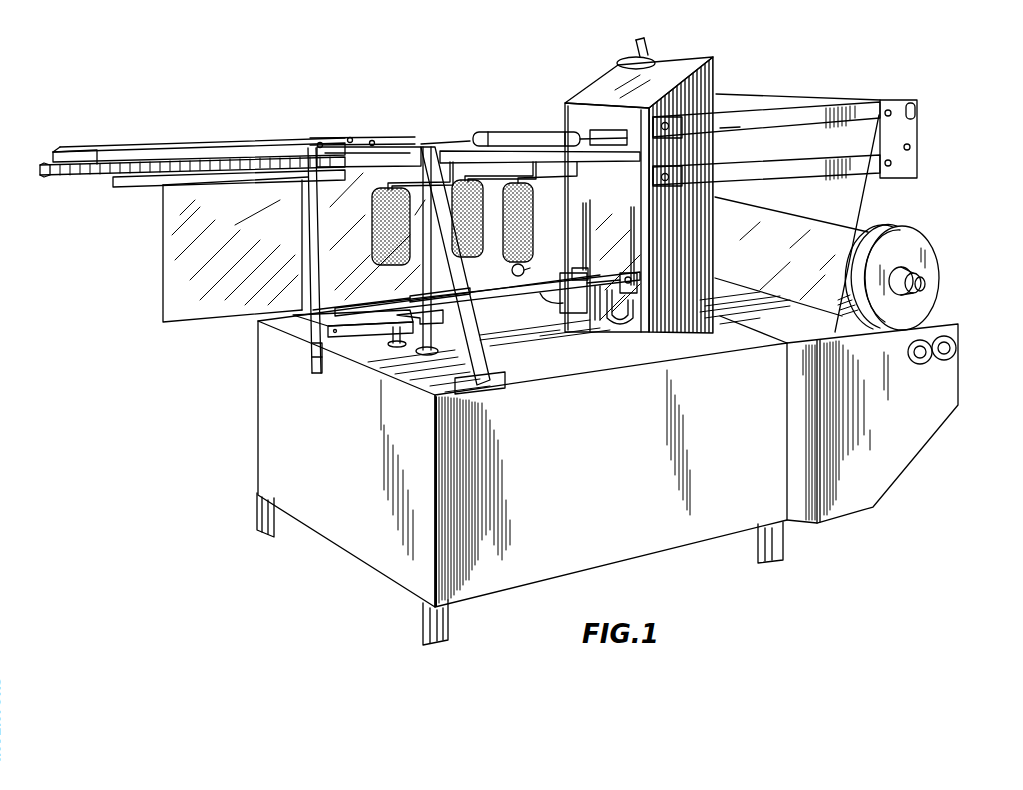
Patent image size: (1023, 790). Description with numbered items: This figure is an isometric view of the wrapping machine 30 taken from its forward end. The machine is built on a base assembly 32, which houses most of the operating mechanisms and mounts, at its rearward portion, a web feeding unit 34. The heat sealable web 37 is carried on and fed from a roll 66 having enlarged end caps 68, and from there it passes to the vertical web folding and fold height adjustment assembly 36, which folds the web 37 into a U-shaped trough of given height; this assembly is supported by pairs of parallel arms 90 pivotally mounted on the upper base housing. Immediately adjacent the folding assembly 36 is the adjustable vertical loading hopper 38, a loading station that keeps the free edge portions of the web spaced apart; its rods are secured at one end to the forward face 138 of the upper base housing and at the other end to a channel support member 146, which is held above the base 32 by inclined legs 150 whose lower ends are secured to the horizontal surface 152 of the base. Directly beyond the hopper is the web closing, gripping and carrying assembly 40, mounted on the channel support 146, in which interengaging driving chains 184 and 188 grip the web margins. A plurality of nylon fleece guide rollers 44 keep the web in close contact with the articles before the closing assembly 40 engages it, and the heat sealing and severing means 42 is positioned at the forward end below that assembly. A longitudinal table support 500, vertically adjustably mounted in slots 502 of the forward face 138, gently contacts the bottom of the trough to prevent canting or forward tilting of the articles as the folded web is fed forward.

The wrapping machine 30 is at (242, 382).
The base assembly 32 is at (604, 457).
The web feeding unit 34 is at (925, 225).
The vertical web folding and fold height adjustment assembly 36 is at (763, 92).
The web 37 is at (858, 197).
The adjustable vertical loading hopper 38 is at (508, 128).
The web closing, gripping and carrying assembly 40 is at (201, 133).
The heat sealing and severing means 42 is at (310, 355).
The nylon fleece guide rollers 44 is at (385, 240).
The roll 66 is at (868, 232).
The end caps 68 is at (928, 258).
The parallel arms 90 is at (758, 125).
The forward face 138 is at (566, 128).
The channel support member 146 is at (335, 142).
The inclined legs 150 is at (478, 352).
The horizontal surface 152 is at (595, 354).
The driving chain 184 is at (42, 170).
The driving chain 188 is at (90, 177).
The longitudinal table support 500 is at (640, 290).
The slots 502 is at (640, 244).